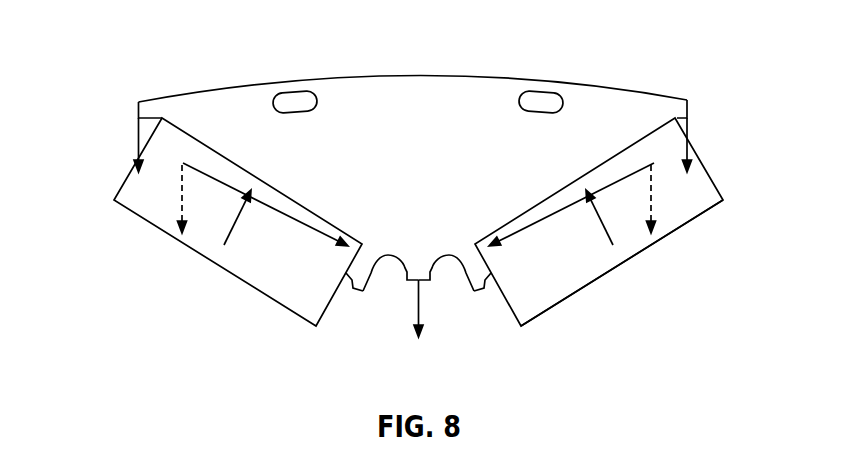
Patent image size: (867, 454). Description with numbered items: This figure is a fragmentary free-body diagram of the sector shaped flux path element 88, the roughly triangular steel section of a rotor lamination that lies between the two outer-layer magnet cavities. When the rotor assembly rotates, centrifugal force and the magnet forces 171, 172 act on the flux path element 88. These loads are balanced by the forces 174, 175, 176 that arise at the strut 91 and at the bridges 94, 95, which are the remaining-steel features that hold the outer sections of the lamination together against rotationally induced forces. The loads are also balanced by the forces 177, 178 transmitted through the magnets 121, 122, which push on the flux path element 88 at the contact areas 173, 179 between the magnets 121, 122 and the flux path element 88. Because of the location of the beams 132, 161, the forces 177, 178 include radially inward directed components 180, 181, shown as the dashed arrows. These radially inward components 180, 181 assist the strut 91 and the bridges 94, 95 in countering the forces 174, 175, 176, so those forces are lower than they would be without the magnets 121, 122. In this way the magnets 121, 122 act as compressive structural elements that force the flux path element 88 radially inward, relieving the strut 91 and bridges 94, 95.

The sector shaped flux path element 88 is at (408, 108).
The bridge 94 is at (147, 104).
The bridge 95 is at (683, 100).
The force at strut 174 is at (137, 145).
The force at bridge 176 is at (688, 128).
The magnet 121 is at (207, 258).
The magnet 122 is at (662, 242).
The force through magnet 177 is at (210, 178).
The contact area 179 is at (492, 246).
The contact area 173 is at (335, 250).
The magnet force 171 is at (222, 243).
The magnet force 172 is at (603, 230).
The radially inward directed component 180 is at (182, 200).
The radially inward directed component 181 is at (653, 189).
The force through magnet 178 is at (555, 223).
The beam 132 is at (352, 288).
The beam 161 is at (485, 288).
The strut 91 is at (430, 287).
The force at bridge 175 is at (412, 283).